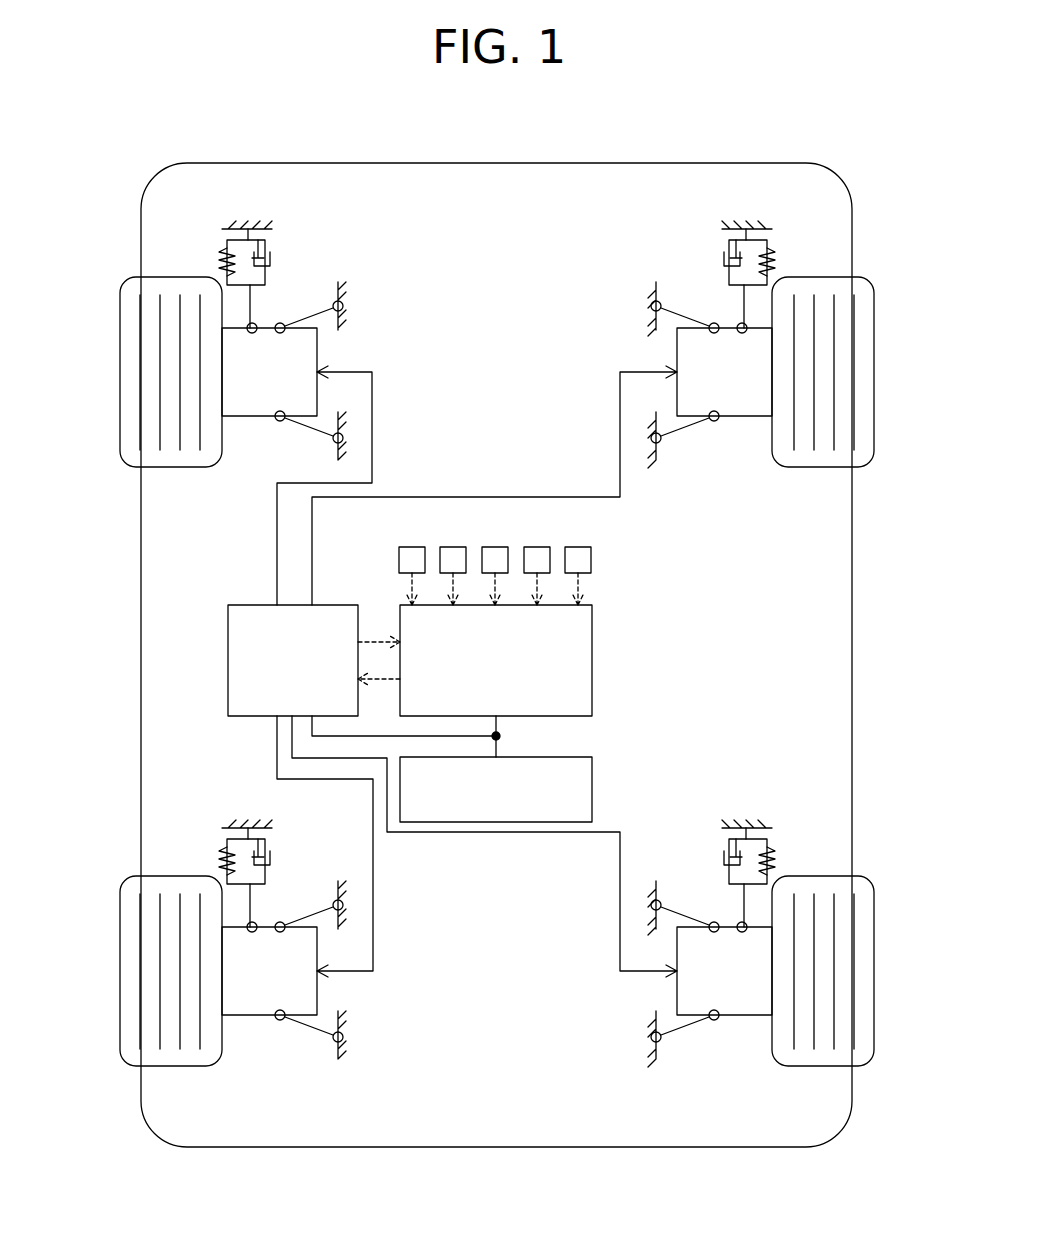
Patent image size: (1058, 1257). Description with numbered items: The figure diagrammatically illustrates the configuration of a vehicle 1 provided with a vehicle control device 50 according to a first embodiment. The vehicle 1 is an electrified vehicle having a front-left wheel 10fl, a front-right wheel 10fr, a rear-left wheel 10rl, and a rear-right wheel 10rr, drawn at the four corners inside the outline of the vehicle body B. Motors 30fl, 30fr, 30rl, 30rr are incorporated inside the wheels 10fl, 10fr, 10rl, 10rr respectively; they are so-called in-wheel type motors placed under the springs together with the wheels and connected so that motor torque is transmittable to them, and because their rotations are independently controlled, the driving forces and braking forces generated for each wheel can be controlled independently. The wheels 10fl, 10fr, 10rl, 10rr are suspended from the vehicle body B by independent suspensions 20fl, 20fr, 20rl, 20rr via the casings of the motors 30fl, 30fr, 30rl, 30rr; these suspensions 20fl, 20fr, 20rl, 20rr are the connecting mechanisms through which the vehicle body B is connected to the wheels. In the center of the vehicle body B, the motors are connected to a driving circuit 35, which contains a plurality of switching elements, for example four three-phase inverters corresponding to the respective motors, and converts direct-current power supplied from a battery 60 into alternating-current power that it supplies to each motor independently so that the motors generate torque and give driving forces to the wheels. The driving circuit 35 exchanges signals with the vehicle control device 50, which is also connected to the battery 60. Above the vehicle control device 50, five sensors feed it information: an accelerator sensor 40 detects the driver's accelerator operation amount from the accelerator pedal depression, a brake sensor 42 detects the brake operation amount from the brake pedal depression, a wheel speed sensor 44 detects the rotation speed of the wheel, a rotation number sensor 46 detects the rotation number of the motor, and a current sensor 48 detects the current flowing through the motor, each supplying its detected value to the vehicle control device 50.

The vehicle 1 is at (895, 246).
The vehicle body B is at (852, 668).
The front-left wheel 10fl is at (120, 373).
The front-right wheel 10fr is at (874, 370).
The rear-left wheel 10rl is at (120, 972).
The rear-right wheel 10rr is at (874, 969).
The suspension 20fl is at (292, 282).
The suspension 20fr is at (701, 282).
The suspension 20rl is at (292, 881).
The suspension 20rr is at (701, 881).
The motor 30fl is at (317, 345).
The motor 30fr is at (677, 352).
The motor 30rl is at (317, 993).
The motor 30rr is at (677, 1001).
The driving circuit 35 is at (228, 620).
The accelerator sensor 40 is at (578, 547).
The brake sensor 42 is at (537, 547).
The wheel speed sensor 44 is at (495, 547).
The rotation number sensor 46 is at (453, 547).
The current sensor 48 is at (412, 547).
The vehicle control device 50 is at (592, 620).
The battery 60 is at (592, 775).